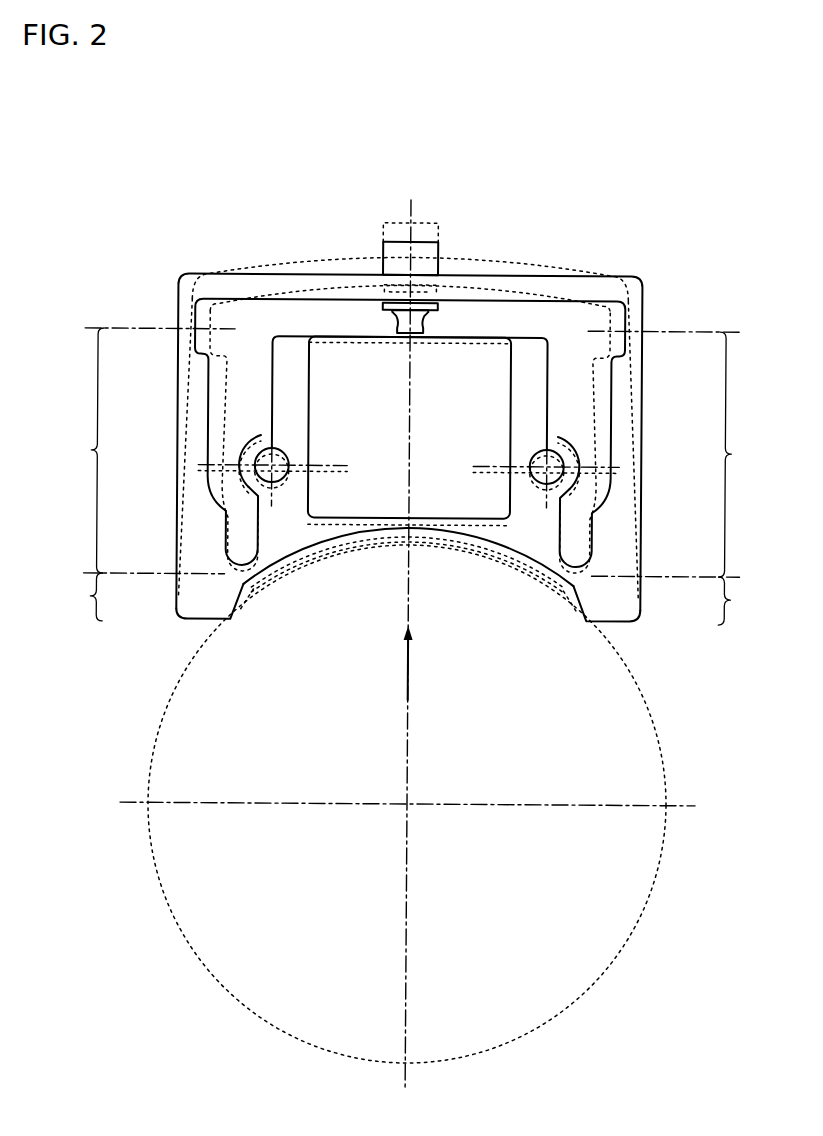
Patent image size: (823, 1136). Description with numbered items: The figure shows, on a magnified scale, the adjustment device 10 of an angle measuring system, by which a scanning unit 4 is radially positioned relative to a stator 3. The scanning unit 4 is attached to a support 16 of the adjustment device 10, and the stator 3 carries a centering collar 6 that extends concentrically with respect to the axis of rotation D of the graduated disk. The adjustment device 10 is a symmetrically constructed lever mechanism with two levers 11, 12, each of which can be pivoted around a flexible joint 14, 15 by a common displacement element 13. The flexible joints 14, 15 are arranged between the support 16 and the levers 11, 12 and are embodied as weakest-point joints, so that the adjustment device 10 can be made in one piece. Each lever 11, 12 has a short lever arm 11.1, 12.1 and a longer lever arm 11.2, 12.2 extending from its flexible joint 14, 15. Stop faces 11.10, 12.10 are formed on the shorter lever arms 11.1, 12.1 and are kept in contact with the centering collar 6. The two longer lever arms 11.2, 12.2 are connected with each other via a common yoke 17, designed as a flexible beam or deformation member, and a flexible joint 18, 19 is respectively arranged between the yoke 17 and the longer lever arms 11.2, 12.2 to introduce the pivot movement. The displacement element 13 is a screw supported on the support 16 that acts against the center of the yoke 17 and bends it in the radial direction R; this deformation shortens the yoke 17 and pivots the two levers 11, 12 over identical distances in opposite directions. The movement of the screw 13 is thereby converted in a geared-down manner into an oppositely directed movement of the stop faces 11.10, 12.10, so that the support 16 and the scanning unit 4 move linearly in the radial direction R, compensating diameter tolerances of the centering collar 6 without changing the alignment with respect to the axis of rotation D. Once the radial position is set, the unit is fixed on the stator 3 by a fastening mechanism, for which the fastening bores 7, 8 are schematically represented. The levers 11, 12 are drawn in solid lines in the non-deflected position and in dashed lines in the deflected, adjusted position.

The stator 3 is at (418, 645).
The scanning unit 4 is at (454, 426).
The centering collar 6 is at (644, 706).
The fastening bore 7 is at (269, 465).
The fastening bore 8 is at (545, 465).
The adjustment device 10 is at (409, 437).
The lever 11 is at (177, 477).
The short lever arm 11.1 is at (135, 597).
The longer lever arm 11.2 is at (141, 451).
The stop face 11.10 is at (232, 621).
The lever 12 is at (641, 414).
The short lever arm 12.1 is at (680, 600).
The longer lever arm 12.2 is at (679, 454).
The stop face 12.10 is at (582, 621).
The displacement element 13 is at (431, 236).
The flexible joint 14 is at (259, 577).
The flexible joint 15 is at (556, 573).
The support 16 is at (527, 354).
The yoke 17 is at (531, 283).
The flexible joint 18 is at (179, 314).
The flexible joint 19 is at (643, 314).
The radial direction R is at (423, 663).
The axis of rotation D is at (409, 806).